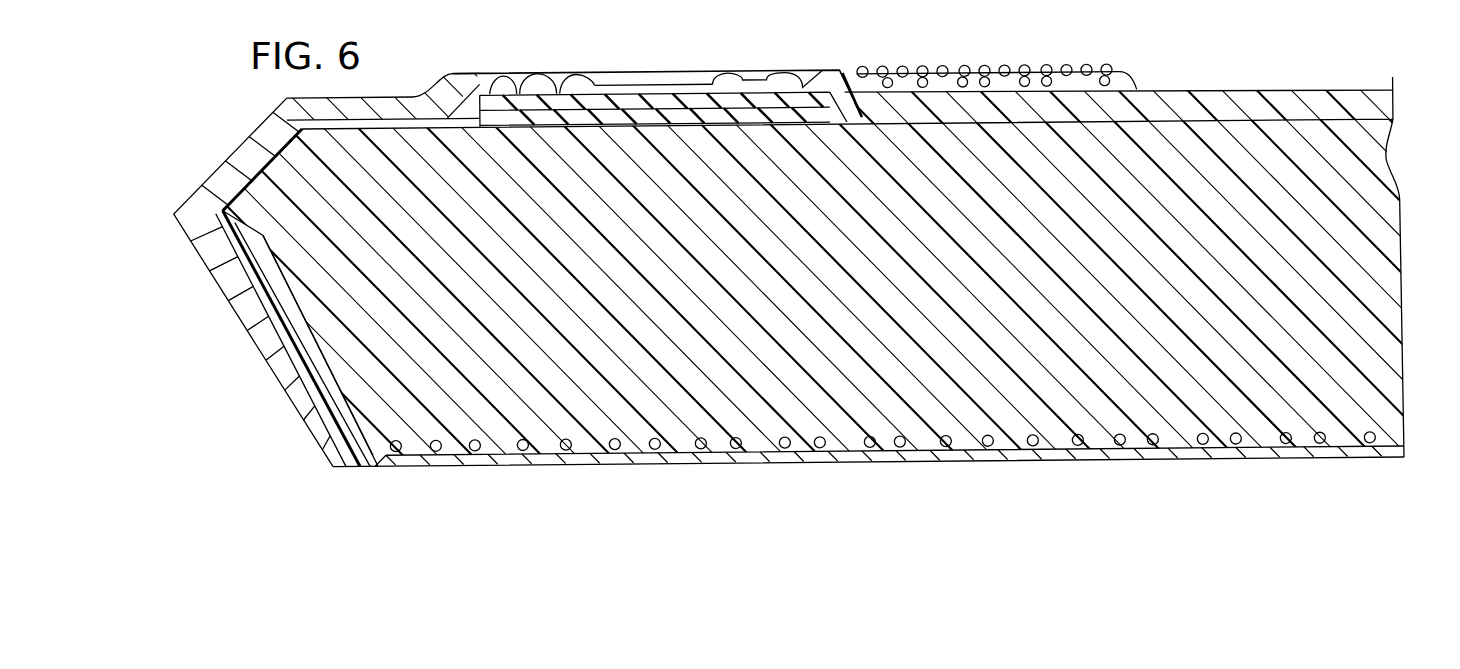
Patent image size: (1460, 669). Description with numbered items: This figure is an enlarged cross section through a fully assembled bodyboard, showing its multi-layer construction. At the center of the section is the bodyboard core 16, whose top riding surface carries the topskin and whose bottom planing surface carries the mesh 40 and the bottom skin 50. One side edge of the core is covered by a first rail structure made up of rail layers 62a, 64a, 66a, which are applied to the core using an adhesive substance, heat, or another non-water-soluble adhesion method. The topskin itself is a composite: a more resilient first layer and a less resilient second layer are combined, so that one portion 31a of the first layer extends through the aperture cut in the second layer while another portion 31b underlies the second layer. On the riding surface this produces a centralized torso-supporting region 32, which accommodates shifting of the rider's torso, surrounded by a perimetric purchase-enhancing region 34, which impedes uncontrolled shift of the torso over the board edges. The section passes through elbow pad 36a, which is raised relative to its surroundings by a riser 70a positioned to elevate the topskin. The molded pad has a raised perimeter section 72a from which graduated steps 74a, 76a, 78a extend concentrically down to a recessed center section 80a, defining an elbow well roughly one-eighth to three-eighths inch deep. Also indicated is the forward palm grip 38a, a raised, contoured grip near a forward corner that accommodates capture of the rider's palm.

The bodyboard core 16 is at (1132, 410).
The bottom skin 50 is at (845, 458).
The mesh 40 is at (630, 452).
The riser 70a is at (762, 106).
The raised perimeter section 72a is at (455, 74).
The graduated step 74a is at (511, 74).
The graduated step 76a is at (546, 74).
The graduated step 78a is at (592, 74).
The recessed center section 80a is at (684, 85).
The elbow pad 36a is at (863, 58).
The forward palm grip 38a is at (1025, 72).
The torso-supporting region 32 is at (1317, 86).
The portion of the first layer 31a is at (1241, 92).
The portion of the first layer 31b is at (272, 156).
The purchase-enhancing region 34 is at (232, 152).
The rail layer 62a is at (338, 467).
The rail layer 64a is at (358, 467).
The rail layer 66a is at (382, 467).